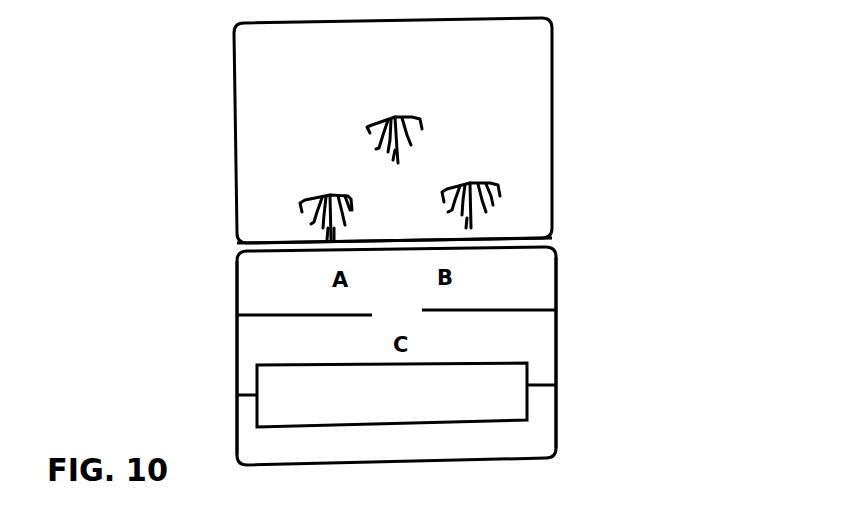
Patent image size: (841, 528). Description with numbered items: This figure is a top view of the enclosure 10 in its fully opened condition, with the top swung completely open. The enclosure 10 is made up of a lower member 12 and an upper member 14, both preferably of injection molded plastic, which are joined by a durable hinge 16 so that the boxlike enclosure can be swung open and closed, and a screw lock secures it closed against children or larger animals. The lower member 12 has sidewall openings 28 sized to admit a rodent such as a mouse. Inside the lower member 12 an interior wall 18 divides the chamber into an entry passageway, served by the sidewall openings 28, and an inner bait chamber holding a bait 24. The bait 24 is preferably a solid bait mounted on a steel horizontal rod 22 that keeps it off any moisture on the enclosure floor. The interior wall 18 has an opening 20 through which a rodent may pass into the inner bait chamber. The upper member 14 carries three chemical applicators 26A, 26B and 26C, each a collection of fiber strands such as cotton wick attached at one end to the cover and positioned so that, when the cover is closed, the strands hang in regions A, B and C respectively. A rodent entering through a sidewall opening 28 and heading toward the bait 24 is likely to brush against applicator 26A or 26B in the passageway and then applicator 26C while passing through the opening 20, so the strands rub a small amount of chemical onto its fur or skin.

The enclosure 10 is at (713, 198).
The lower member 12 is at (558, 368).
The upper member 14 is at (552, 95).
The hinge 16 is at (237, 247).
The interior wall 18 is at (249, 305).
The opening 20 is at (517, 325).
The horizontal rod 22 is at (543, 388).
The bait 24 is at (510, 422).
The chemical applicator 26A is at (300, 200).
The chemical applicator 26B is at (500, 188).
The chemical applicator 26C is at (368, 128).
The sidewall openings 28 is at (236, 279).